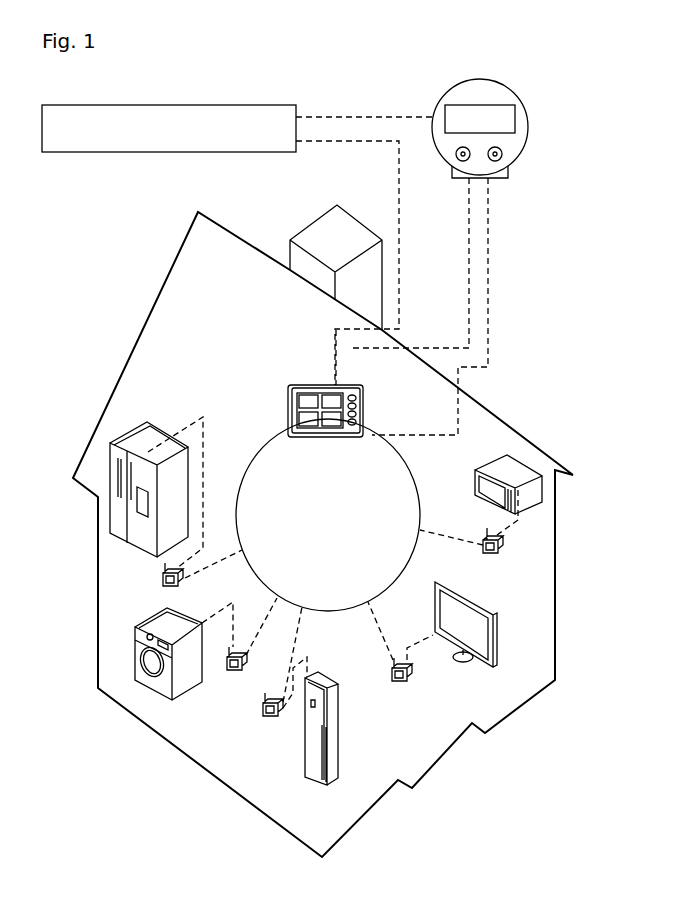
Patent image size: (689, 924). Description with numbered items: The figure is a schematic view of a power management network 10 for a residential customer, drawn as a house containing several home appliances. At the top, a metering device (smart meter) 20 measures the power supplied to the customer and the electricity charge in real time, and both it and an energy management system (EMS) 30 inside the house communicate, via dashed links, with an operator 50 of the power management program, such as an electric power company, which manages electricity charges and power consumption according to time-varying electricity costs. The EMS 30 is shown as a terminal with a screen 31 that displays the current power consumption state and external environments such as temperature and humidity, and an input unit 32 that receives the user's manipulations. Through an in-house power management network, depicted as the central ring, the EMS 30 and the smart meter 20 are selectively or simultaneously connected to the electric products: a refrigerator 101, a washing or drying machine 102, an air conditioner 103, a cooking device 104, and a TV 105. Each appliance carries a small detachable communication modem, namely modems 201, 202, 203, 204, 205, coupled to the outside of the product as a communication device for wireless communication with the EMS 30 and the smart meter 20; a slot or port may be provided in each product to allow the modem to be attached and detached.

The power management network 10 is at (530, 356).
The metering device (smart meter) 20 is at (528, 127).
The energy management system (EMS) 30 is at (321, 378).
The screen 31 is at (310, 400).
The input unit 32 is at (358, 405).
The operator of the power management program 50 is at (170, 104).
The refrigerator 101 is at (112, 483).
The washing or drying machine 102 is at (155, 688).
The air conditioner 103 is at (333, 758).
The cooking device 104 is at (517, 463).
The TV 105 is at (493, 638).
The communication modem 201 is at (163, 580).
The communication modem 202 is at (227, 672).
The communication modem 203 is at (263, 716).
The communication modem 204 is at (503, 548).
The communication modem 205 is at (410, 680).